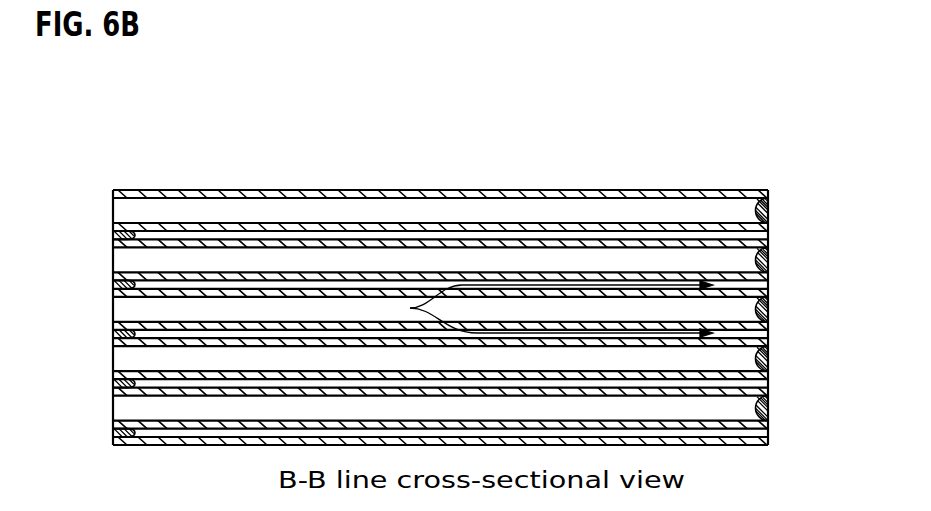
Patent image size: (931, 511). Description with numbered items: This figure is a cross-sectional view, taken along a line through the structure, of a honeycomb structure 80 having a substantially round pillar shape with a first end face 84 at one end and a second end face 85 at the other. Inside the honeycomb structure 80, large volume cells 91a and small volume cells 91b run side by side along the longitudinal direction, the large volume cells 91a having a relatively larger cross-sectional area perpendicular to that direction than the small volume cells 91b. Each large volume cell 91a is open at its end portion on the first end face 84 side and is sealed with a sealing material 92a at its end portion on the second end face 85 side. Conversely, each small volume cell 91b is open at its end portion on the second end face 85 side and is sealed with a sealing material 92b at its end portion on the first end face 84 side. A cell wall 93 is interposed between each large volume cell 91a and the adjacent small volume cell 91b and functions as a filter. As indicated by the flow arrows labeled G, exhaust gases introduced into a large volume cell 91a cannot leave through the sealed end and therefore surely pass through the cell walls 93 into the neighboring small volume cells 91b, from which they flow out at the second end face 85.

The honeycomb structure 80 is at (486, 153).
The sealing material 92b is at (118, 234).
The first end face 84 is at (118, 282).
The gas flow G is at (410, 308).
The second end face 85 is at (768, 274).
The small volume cell 91b is at (766, 331).
The sealing material 92a is at (760, 405).
The large volume cell 91a is at (118, 404).
The cell wall 93 is at (240, 392).